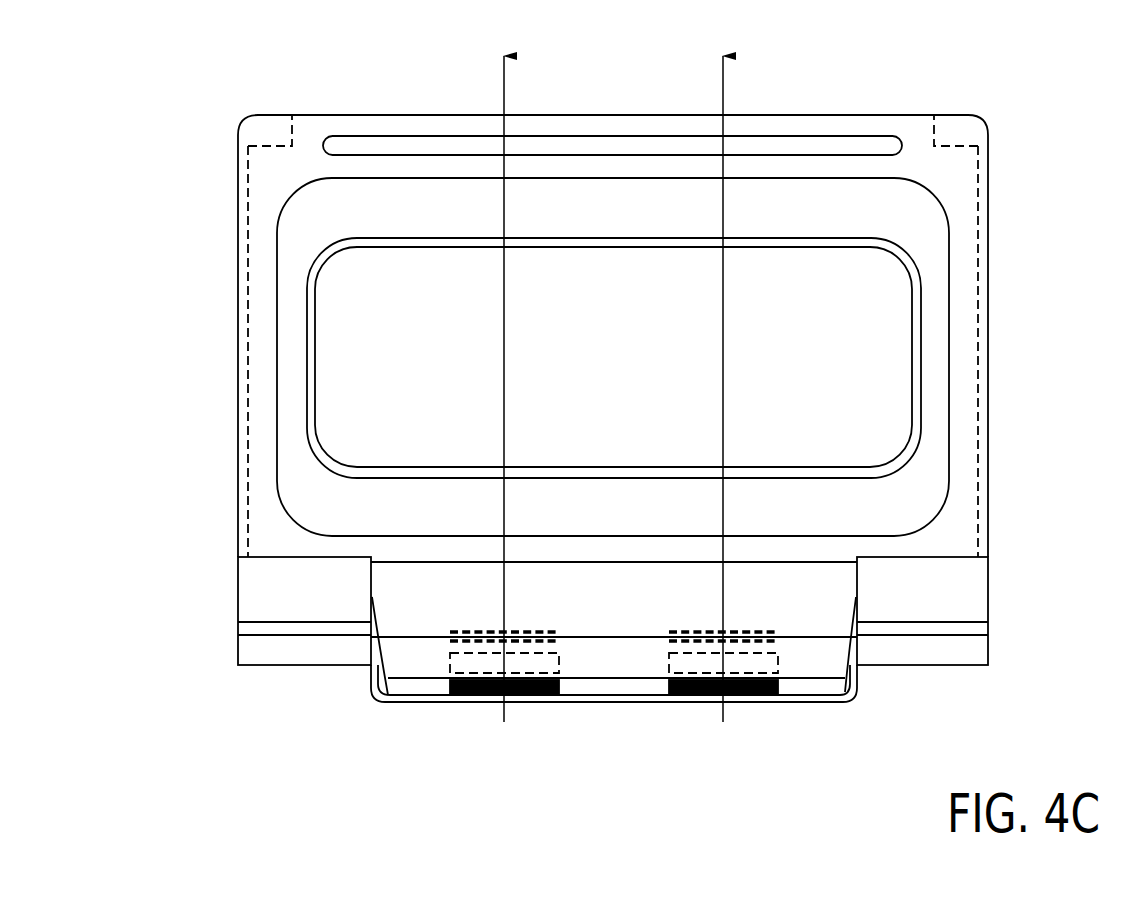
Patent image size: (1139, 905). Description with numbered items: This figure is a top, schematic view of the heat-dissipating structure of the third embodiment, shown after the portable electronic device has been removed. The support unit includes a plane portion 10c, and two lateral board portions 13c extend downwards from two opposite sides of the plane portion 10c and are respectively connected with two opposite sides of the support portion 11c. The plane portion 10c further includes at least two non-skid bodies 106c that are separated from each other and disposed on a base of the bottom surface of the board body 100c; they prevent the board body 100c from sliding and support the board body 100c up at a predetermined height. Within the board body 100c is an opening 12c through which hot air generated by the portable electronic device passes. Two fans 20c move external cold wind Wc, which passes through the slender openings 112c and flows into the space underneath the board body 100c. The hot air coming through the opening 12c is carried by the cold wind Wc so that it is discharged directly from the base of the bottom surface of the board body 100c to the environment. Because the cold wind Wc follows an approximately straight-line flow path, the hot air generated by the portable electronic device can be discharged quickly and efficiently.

The plane portion 10c is at (992, 137).
The support portion 11c is at (952, 583).
The opening 12c is at (872, 306).
The lateral board portions 13c is at (236, 327).
The fans 20c is at (560, 655).
The board body 100c is at (963, 195).
The non-skid bodies 106c is at (267, 127).
The slender openings 112c is at (450, 641).
The external cold wind Wc is at (597, 397).